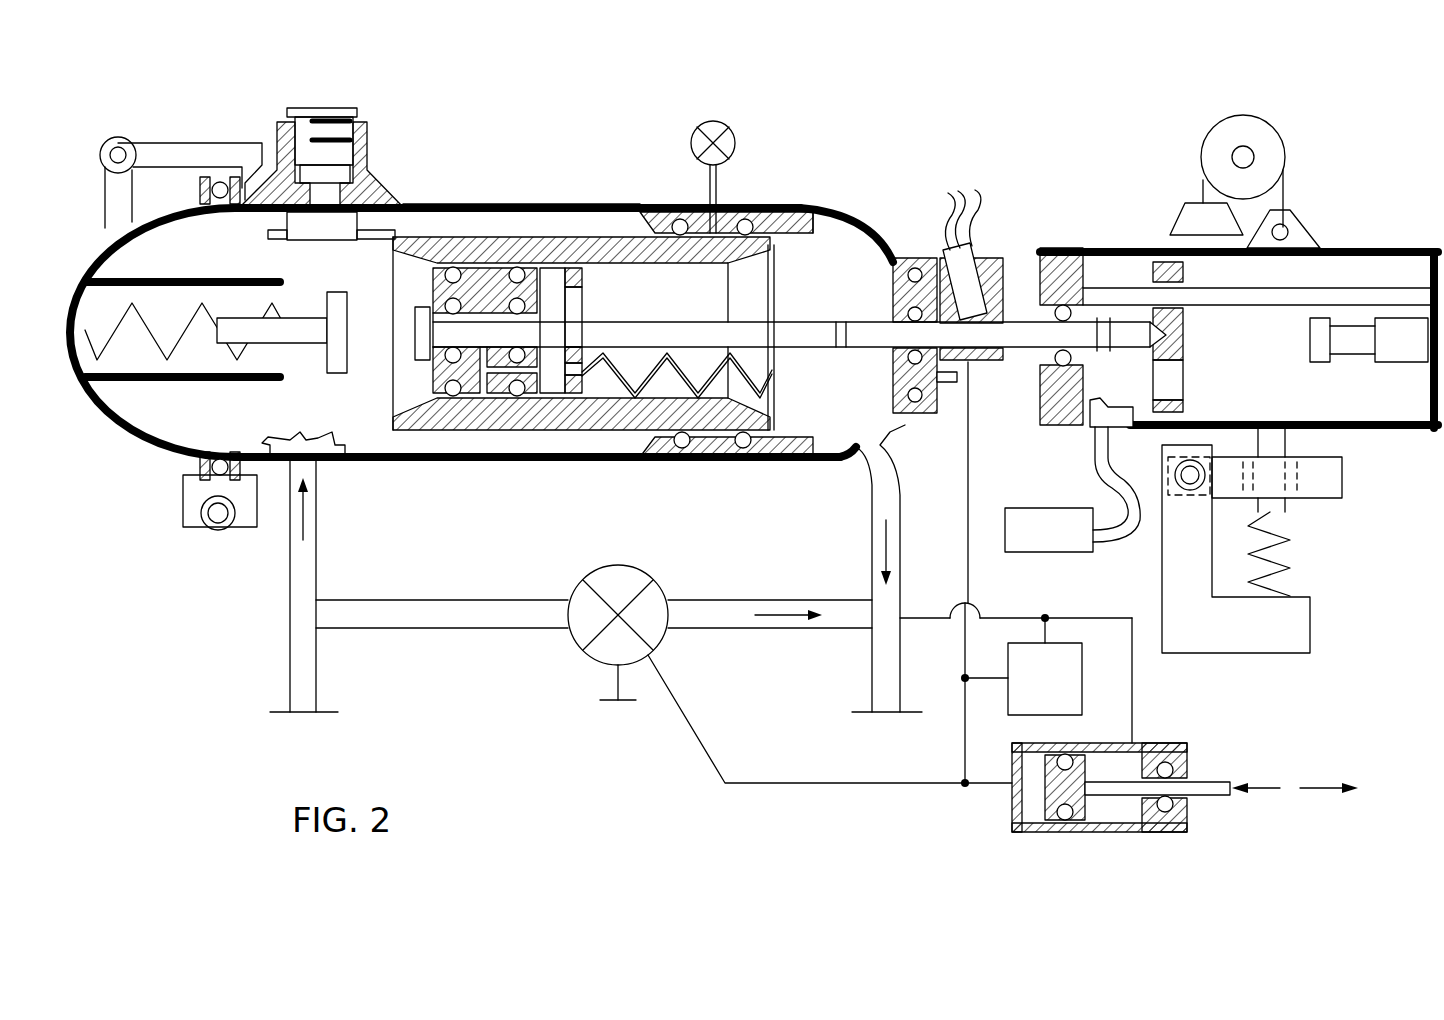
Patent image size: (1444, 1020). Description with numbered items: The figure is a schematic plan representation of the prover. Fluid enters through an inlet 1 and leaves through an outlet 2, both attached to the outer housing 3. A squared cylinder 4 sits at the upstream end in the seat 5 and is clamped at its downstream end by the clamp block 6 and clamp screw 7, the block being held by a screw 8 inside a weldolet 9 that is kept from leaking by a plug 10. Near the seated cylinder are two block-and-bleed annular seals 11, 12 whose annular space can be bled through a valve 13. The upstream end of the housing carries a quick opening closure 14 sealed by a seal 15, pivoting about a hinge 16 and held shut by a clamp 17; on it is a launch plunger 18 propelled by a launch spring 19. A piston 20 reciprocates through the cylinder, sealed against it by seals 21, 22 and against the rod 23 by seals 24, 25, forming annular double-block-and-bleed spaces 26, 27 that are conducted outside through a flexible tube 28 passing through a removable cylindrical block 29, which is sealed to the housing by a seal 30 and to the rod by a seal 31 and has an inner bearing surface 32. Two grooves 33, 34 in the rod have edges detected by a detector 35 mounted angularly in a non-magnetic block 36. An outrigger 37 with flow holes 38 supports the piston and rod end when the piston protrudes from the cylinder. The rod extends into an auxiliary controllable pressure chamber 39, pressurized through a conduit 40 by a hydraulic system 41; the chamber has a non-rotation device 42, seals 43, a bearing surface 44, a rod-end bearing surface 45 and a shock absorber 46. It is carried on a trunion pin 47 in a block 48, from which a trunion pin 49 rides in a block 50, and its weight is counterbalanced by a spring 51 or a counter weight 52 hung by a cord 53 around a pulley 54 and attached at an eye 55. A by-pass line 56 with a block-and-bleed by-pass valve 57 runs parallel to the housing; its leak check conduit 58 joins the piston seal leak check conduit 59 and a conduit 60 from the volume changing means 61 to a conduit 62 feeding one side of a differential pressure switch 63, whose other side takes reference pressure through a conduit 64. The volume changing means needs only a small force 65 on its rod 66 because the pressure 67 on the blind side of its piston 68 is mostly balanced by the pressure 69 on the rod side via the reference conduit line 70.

The inlet 1 is at (303, 713).
The outlet 2 is at (886, 713).
The outer housing 3 is at (642, 205).
The cylinder 4 is at (522, 237).
The seat 5 is at (776, 250).
The clamp block 6 is at (285, 222).
The clamp screw 7 is at (278, 239).
The screw 8 is at (362, 165).
The weldolet 9 is at (367, 125).
The plug 10 is at (320, 108).
The block-and-bleed annular seal 11 is at (748, 207).
The block-and-bleed annular seal 12 is at (690, 213).
The valve 13 is at (735, 143).
The quick opening closure 14 is at (118, 418).
The seal 15 is at (200, 472).
The hinge 16 is at (215, 527).
The clamp 17 is at (240, 140).
The launch plunger 18 is at (340, 373).
The launch spring 19 is at (160, 345).
The piston 20 is at (437, 290).
The seal 21 is at (470, 268).
The seal 22 is at (555, 268).
The rod 23 is at (792, 312).
The seal 24 is at (435, 318).
The seal 25 is at (515, 326).
The annular double-block-and-bleed space 26 is at (482, 395).
The annular double-block-and-bleed space 27 is at (493, 350).
The flexible tube 28 is at (790, 375).
The cylindrical block 29 is at (950, 362).
The seal 30 is at (905, 420).
The seal 31 is at (922, 342).
The inner bearing surface 32 is at (905, 342).
The groove 33 is at (830, 322).
The groove 34 is at (1105, 365).
The detector 35 is at (988, 225).
The non-magnetic block 36 is at (1000, 265).
The outrigger 37 is at (583, 276).
The flow holes 38 is at (583, 312).
The auxiliary controllable pressure chamber 39 is at (1085, 255).
The conduit 40 is at (1096, 508).
The hydraulic system 41 is at (1005, 530).
The non-rotation device 42 is at (1098, 268).
The seals 43 is at (1045, 250).
The bearing surface 44 is at (1030, 335).
The bearing surface 45 is at (1165, 258).
The shock absorber 46 is at (1400, 365).
The trunion pin 47 is at (1292, 440).
The block 48 is at (1345, 480).
The trunion pin 49 is at (1172, 477).
The block 50 is at (1162, 600).
The spring 51 is at (1292, 558).
The counter weight 52 is at (1175, 225).
The cord 53 is at (1203, 195).
The pulley 54 is at (1238, 115).
The eye 55 is at (1305, 240).
The by-pass line 56 is at (410, 628).
The by-pass valve 57 is at (640, 570).
The leak check conduit 58 is at (688, 715).
The piston seal leak check conduit 59 is at (960, 658).
The conduit 60 is at (962, 783).
The volume changing means 61 is at (1050, 832).
The conduit 62 is at (1006, 678).
The differential pressure switch 63 is at (1083, 670).
The conduit 64 is at (1044, 616).
The force 65 is at (1312, 785).
The rod 66 is at (1228, 795).
The pressure 67 is at (1040, 800).
The piston 68 is at (1012, 770).
The pressure 69 is at (1113, 767).
The reference conduit line 70 is at (1133, 670).